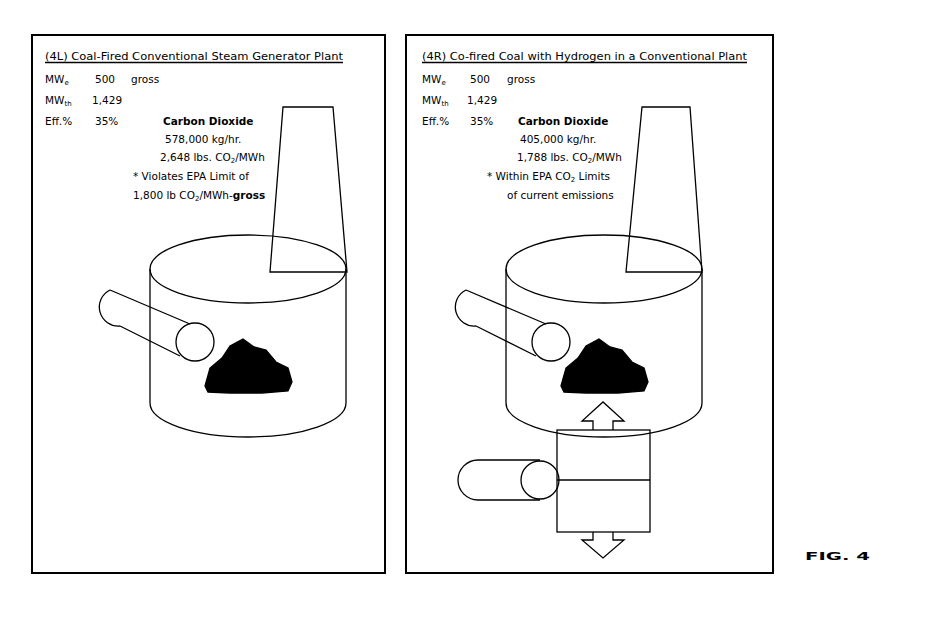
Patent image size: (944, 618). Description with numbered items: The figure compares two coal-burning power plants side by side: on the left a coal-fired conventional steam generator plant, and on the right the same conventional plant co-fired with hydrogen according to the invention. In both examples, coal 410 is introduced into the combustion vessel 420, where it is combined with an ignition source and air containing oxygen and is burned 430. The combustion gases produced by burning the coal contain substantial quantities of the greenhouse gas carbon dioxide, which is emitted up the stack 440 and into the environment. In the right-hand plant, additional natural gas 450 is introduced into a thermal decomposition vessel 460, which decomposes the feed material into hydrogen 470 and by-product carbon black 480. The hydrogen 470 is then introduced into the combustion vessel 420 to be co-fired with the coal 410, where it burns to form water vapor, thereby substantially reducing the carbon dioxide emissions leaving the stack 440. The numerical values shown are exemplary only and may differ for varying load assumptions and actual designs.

The coal 410 is at (314, 295).
The combustion vessel 420 is at (418, 336).
The burned coal 430 is at (407, 366).
The stack 440 is at (486, 172).
The natural gas 450 is at (491, 502).
The thermal decomposition vessel 460 is at (589, 481).
The hydrogen 470 is at (664, 437).
The carbon black 480 is at (674, 527).